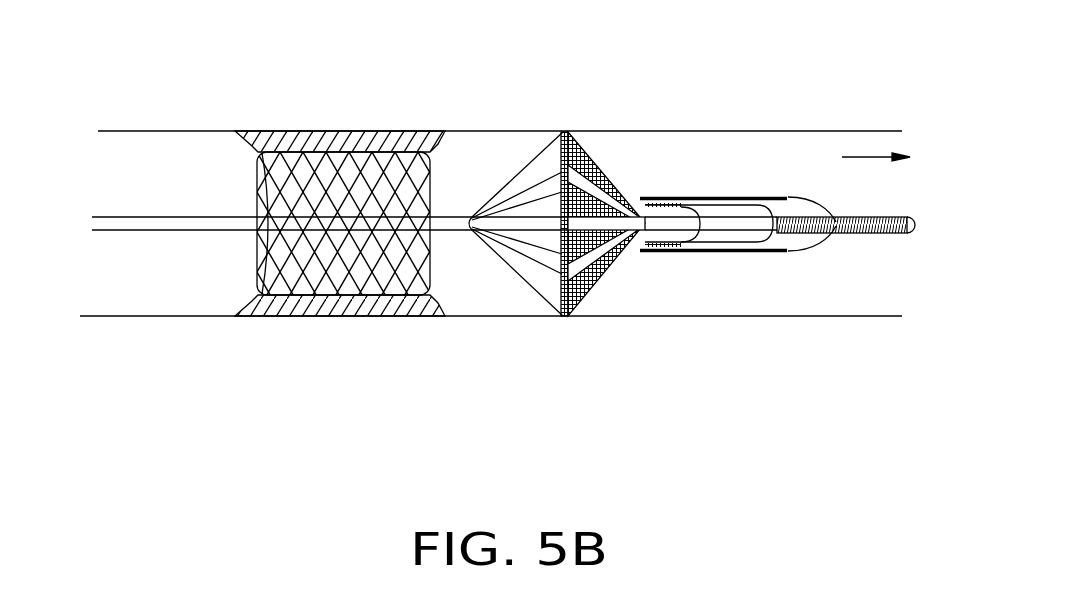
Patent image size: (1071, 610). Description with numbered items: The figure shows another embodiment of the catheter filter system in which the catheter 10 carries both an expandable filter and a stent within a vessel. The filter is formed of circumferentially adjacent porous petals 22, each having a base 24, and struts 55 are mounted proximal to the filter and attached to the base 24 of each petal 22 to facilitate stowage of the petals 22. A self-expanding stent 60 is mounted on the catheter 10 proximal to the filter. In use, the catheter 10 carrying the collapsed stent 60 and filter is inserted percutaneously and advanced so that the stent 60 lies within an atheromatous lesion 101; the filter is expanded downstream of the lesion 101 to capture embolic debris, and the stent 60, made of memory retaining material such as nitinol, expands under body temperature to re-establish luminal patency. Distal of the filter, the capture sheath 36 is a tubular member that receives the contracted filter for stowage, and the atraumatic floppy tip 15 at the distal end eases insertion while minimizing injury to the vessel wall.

The catheter 10 is at (146, 205).
The self-expanding stent 60 is at (297, 172).
The atheromatous lesion 101 is at (330, 140).
The struts 55 is at (527, 165).
The petal 22 is at (598, 160).
The base 24 is at (555, 305).
The capture sheath 36 is at (720, 253).
The atraumatic floppy tip 15 is at (847, 233).